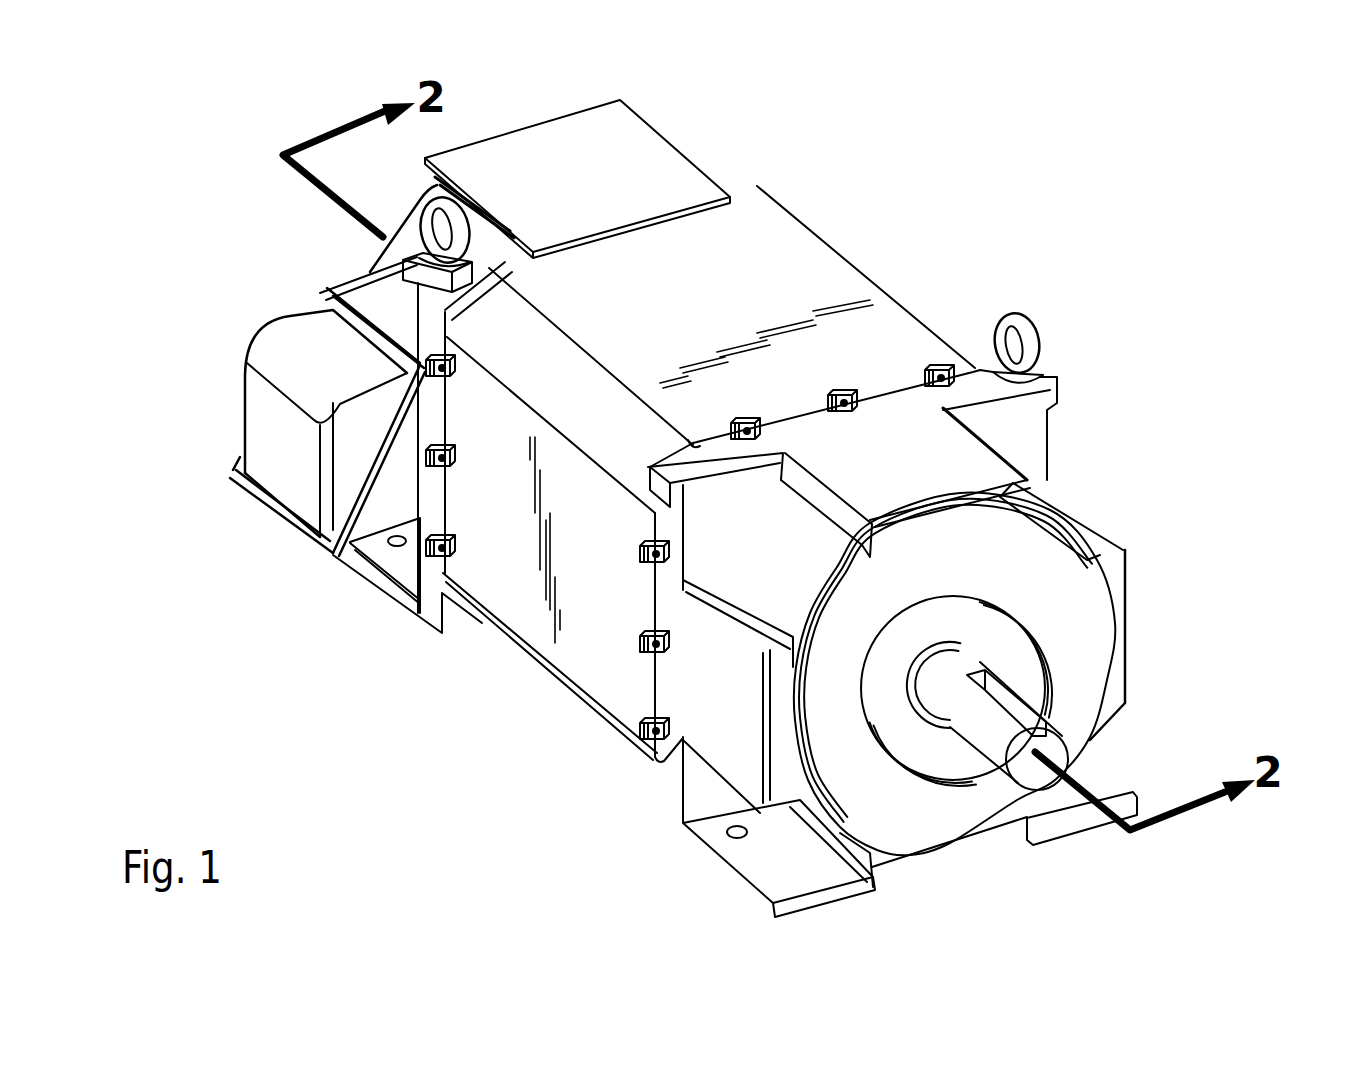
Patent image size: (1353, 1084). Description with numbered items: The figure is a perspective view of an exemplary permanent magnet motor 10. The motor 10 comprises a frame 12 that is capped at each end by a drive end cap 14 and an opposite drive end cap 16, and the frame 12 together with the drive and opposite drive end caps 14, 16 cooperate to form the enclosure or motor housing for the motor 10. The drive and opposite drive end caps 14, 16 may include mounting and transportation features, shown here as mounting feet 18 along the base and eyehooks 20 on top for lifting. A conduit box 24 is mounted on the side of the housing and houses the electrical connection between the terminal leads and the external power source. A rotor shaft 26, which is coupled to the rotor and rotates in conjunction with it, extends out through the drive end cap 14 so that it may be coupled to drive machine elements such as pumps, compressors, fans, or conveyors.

The permanent magnet motor 10 is at (403, 684).
The frame 12 is at (820, 242).
The drive end cap 14 is at (990, 473).
The opposite drive end cap 16 is at (707, 170).
The mounting feet 18 is at (762, 863).
The eyehooks 20 is at (1013, 313).
The conduit box 24 is at (267, 417).
The rotor shaft 26 is at (1045, 714).